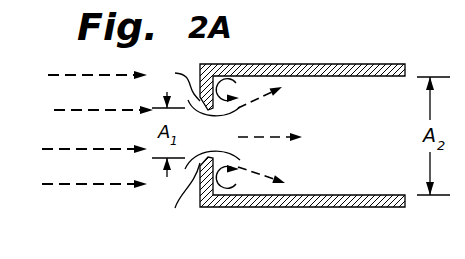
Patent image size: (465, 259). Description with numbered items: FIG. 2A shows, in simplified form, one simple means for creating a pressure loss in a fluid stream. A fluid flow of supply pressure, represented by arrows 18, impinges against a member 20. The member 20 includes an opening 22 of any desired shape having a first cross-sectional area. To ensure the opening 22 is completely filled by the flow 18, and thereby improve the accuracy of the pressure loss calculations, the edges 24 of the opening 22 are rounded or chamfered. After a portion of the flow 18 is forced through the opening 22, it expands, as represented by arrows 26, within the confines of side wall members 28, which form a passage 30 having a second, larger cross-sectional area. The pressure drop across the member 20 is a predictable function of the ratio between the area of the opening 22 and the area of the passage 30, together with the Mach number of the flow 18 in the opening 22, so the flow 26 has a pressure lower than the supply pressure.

The fluid flow arrows 18 is at (88, 195).
The member 20 is at (275, 197).
The opening 22 is at (230, 146).
The edges 24 is at (201, 110).
The expansion flow arrows 26 is at (258, 103).
The side wall members 28 is at (347, 64).
The passage 30 is at (385, 146).